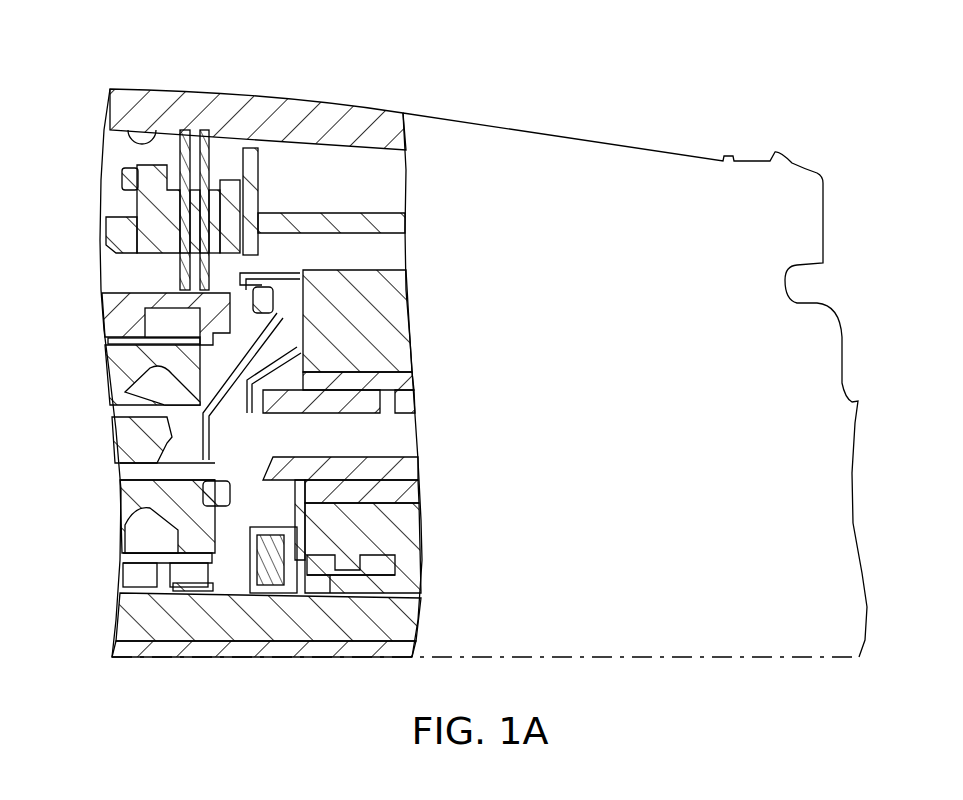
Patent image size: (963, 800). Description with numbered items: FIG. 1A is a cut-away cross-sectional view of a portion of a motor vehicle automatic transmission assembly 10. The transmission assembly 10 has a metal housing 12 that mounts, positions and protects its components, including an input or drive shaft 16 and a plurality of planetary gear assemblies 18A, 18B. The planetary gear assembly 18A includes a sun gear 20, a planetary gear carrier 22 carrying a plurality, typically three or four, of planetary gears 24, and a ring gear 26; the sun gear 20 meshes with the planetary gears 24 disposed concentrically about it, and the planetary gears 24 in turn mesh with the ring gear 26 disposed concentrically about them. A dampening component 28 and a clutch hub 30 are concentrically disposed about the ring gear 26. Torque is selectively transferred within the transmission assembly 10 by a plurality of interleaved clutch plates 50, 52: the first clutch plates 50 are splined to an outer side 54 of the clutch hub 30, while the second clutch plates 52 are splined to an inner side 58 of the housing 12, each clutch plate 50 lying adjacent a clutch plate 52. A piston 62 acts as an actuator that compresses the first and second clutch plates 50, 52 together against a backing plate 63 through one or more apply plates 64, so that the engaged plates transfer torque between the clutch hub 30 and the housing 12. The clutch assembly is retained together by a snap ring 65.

The motor vehicle transmission assembly 10 is at (545, 60).
The housing 12 is at (518, 128).
The input or drive shaft 16 is at (132, 613).
The planetary gear assembly 18A is at (120, 518).
The planetary gear assembly 18B is at (432, 548).
The sun gear 20 is at (122, 540).
The planetary gear carrier 22 is at (125, 472).
The planetary gears 24 is at (130, 393).
The ring gear 26 is at (123, 353).
The dampening component 28 is at (110, 337).
The clutch hub 30 is at (120, 301).
The first clutch plates 50 is at (112, 242).
The second clutch plates 52 is at (210, 130).
The outer side 54 is at (164, 276).
The inner side 58 is at (155, 130).
The piston 62 is at (318, 225).
The backing plate 63 is at (145, 212).
The apply plates 64 is at (262, 192).
The snap ring 65 is at (122, 175).